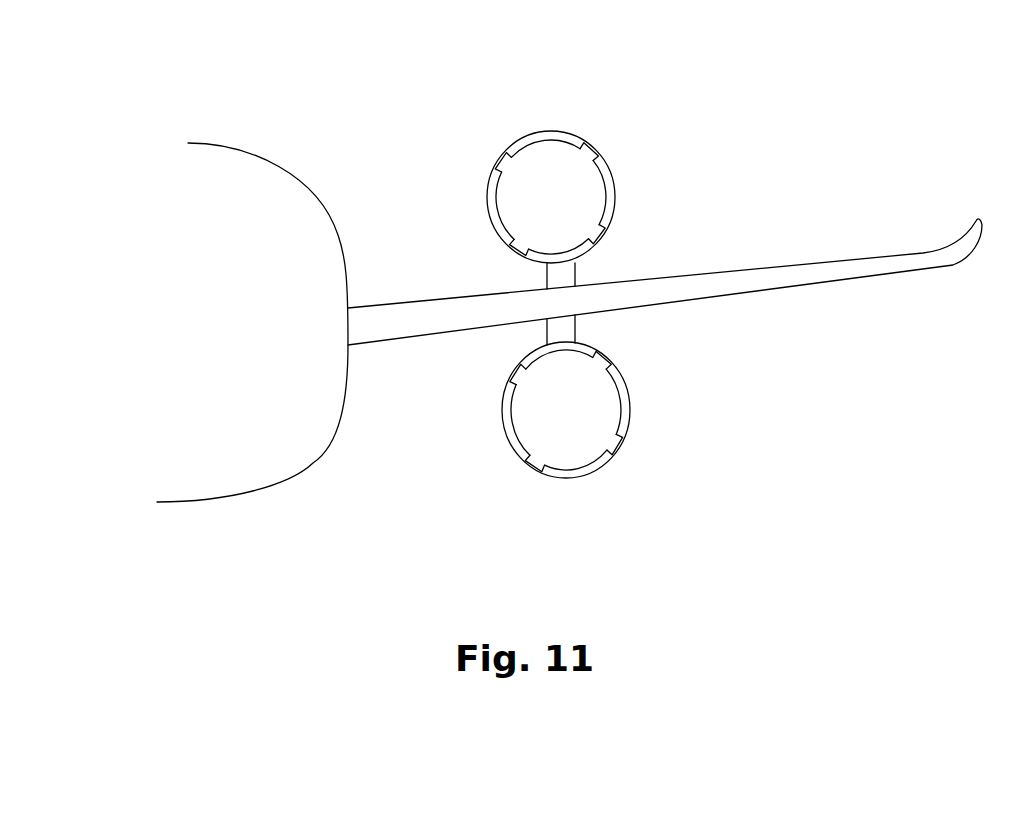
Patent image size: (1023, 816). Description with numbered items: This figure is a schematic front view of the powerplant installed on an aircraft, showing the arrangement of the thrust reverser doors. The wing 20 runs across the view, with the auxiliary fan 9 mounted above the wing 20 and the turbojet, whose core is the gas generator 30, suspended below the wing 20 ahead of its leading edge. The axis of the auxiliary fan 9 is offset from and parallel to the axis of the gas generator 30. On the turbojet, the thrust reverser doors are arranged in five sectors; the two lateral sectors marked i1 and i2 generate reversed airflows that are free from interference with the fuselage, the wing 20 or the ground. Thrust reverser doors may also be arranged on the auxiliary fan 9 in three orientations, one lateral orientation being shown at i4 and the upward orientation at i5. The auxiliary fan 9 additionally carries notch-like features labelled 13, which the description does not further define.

The auxiliary fan 9 is at (570, 151).
The notches of upper ring 13 is at (490, 200).
The upward orientation i5 is at (548, 140).
The lateral orientation i4 is at (612, 185).
The lateral sector i1 is at (510, 415).
The lateral sector i2 is at (627, 405).
The wing 20 is at (783, 304).
The gas generator 30 is at (569, 455).